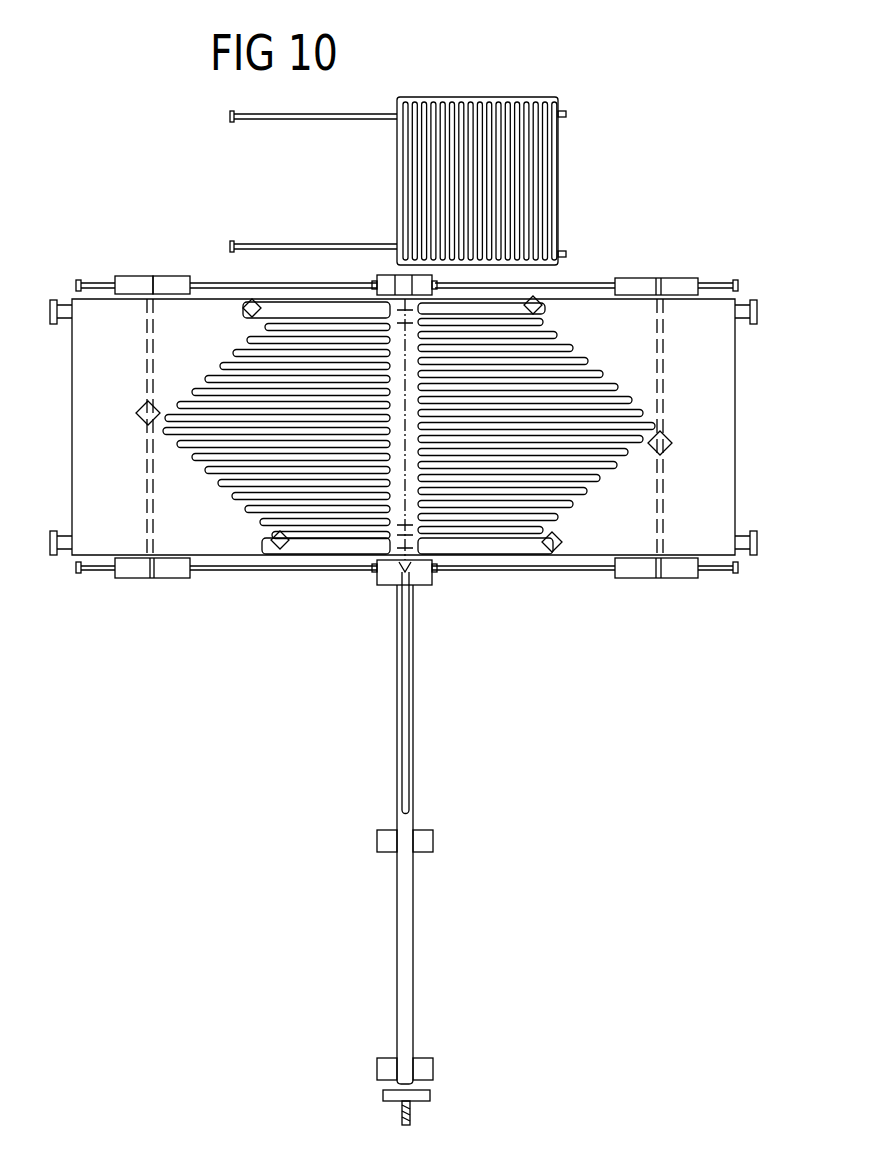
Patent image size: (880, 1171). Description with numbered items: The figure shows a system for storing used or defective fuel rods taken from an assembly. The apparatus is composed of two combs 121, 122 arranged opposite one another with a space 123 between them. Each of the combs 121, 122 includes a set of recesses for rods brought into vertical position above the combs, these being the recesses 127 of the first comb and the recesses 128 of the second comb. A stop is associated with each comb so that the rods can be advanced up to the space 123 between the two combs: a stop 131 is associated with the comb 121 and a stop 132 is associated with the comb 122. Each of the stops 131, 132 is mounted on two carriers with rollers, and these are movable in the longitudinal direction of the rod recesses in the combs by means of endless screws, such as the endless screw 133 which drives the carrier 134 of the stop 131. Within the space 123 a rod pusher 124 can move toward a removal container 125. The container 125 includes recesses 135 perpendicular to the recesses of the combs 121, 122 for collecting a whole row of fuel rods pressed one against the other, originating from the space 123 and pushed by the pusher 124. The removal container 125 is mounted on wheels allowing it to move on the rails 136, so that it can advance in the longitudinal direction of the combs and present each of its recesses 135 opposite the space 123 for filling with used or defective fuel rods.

The comb 121 is at (221, 522).
The comb 122 is at (600, 525).
The space 123 is at (402, 498).
The rod pusher 124 is at (415, 712).
The removal container 125 is at (560, 200).
The recesses of comb 127 is at (302, 378).
The recesses of comb 128 is at (553, 382).
The stop 131 is at (152, 518).
The stop 132 is at (660, 575).
The endless screw 133 is at (200, 278).
The carrier 134 is at (138, 283).
The recesses of container 135 is at (528, 168).
The rails 136 is at (287, 245).